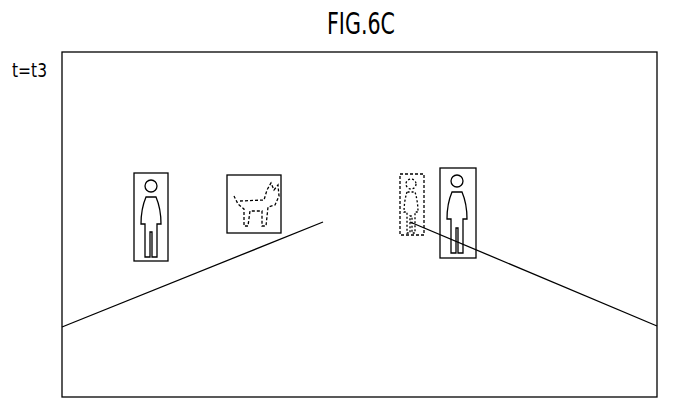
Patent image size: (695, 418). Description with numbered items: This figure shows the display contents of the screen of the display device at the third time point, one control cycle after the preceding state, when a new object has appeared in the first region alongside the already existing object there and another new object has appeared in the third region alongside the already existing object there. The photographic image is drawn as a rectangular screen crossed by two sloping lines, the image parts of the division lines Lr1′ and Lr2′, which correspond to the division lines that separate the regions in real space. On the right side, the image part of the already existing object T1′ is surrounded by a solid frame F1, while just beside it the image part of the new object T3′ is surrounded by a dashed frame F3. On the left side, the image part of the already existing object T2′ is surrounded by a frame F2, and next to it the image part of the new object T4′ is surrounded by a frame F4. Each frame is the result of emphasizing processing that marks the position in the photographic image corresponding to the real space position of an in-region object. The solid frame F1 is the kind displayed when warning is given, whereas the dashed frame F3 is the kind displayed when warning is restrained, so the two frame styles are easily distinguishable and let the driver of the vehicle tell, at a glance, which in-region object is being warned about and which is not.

The frame F1 is at (476, 180).
The image part of object T1 T1′ is at (466, 195).
The frame F2 is at (168, 196).
The image part of object T2 T2′ is at (158, 212).
The dashed frame F3 is at (400, 184).
The image part of object T3 T3′ is at (403, 215).
The frame F4 is at (257, 175).
The image part of object T4 T4′ is at (246, 200).
The image part of division line Lr1 Lr1′ is at (540, 276).
The image part of division line Lr2 Lr2′ is at (143, 295).